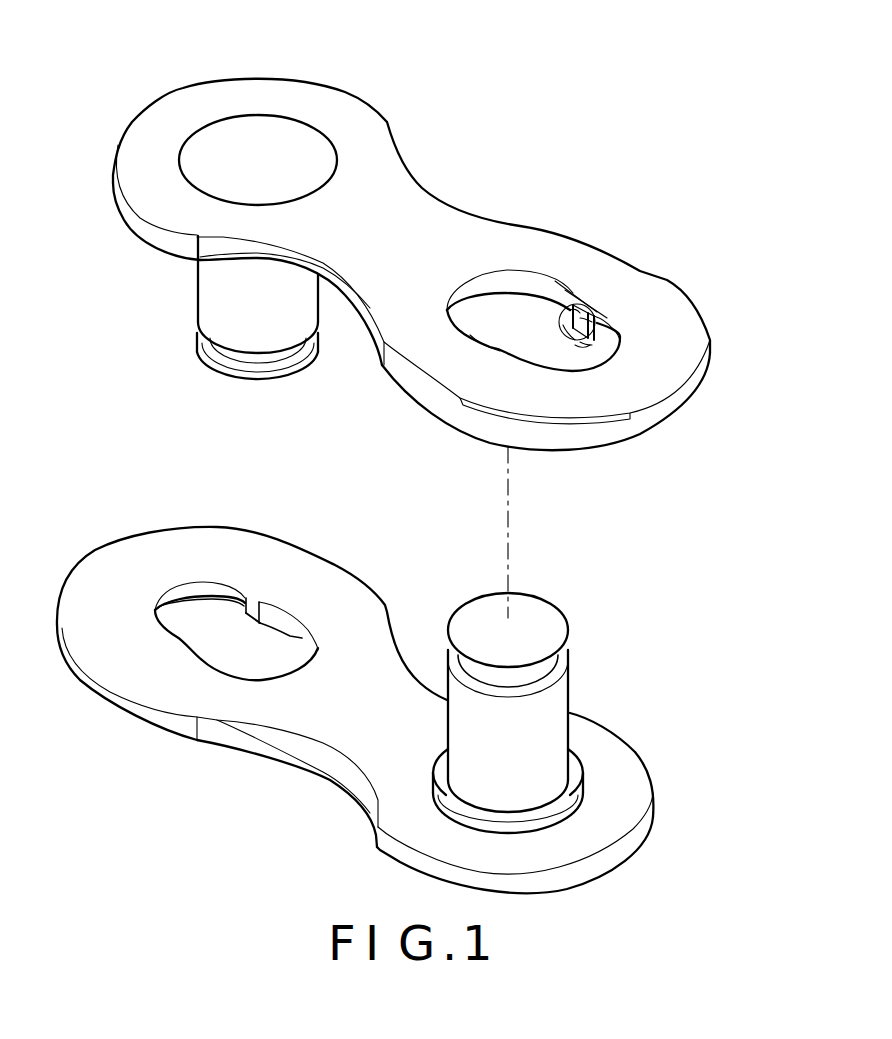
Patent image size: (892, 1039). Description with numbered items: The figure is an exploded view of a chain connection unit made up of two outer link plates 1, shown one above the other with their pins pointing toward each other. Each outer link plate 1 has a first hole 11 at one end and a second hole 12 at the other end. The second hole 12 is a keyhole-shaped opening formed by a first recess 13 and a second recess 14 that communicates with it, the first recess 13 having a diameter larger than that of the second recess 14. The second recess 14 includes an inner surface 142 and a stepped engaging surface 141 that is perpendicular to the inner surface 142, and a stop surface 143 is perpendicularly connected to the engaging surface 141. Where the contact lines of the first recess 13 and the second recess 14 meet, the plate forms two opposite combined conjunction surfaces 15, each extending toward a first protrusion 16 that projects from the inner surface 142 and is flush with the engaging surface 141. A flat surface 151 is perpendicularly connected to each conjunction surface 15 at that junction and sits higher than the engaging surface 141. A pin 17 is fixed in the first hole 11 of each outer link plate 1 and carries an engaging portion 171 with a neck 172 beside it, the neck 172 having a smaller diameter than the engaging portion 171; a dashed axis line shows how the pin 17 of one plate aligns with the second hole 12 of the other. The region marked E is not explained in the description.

The outer link plate 1 is at (407, 205).
The first hole 11 is at (253, 115).
The second hole 12 is at (523, 330).
The first recess 13 is at (479, 303).
The second recess 14 is at (600, 360).
The engaging surface 141 is at (627, 340).
The inner surface 142 is at (607, 337).
The stop surface 143 is at (583, 307).
The combined conjunction surface 15 is at (573, 323).
The flat surface 151 is at (573, 315).
The first protrusion 16 is at (590, 342).
The pin 17 is at (207, 290).
The engaging portion 171 is at (290, 368).
The neck 172 is at (233, 358).
The elastic region E is at (577, 340).